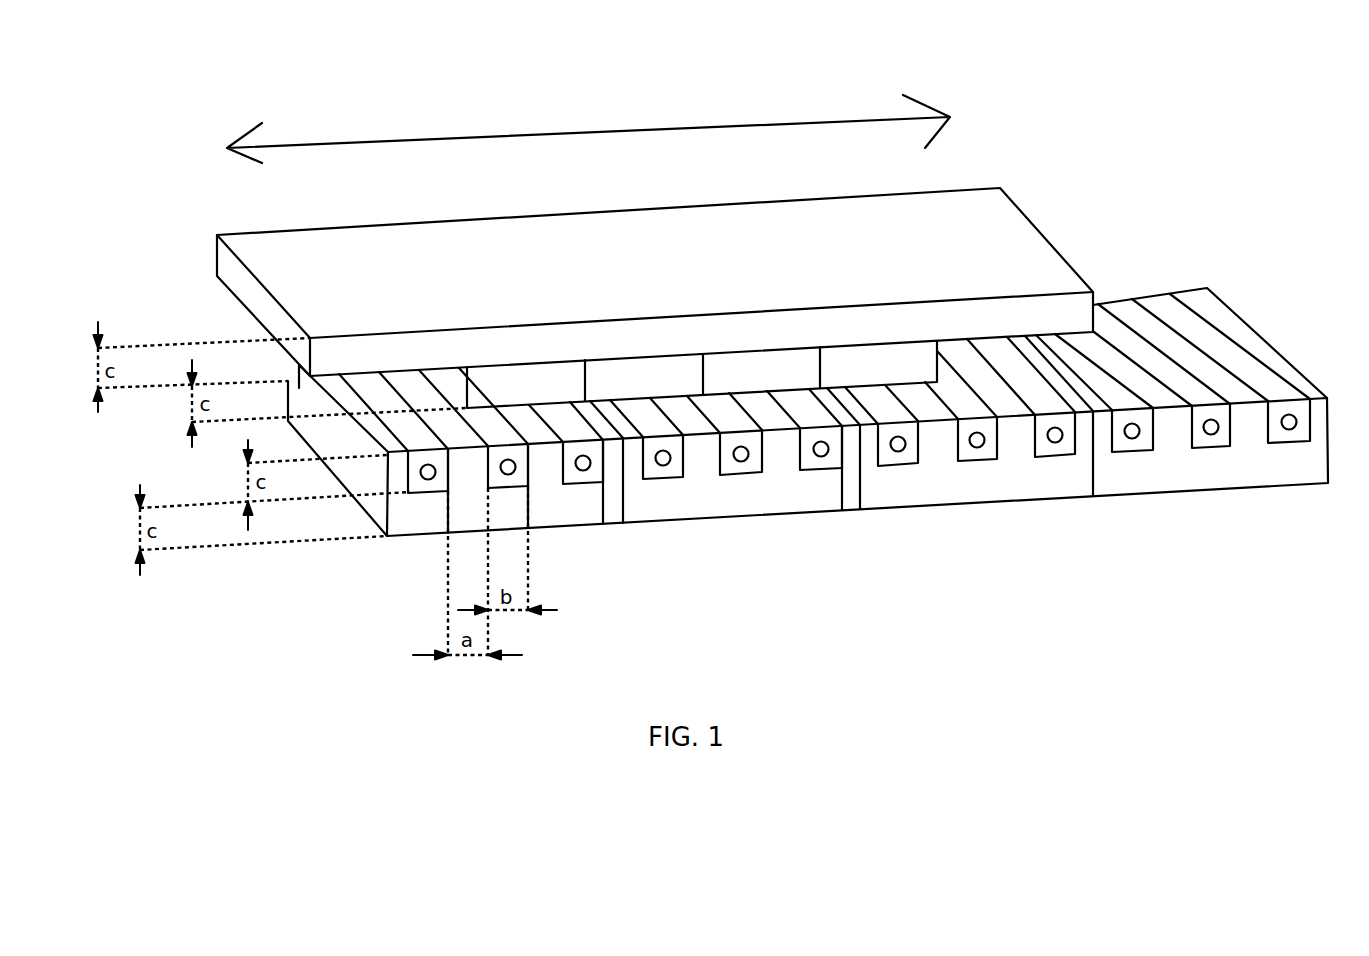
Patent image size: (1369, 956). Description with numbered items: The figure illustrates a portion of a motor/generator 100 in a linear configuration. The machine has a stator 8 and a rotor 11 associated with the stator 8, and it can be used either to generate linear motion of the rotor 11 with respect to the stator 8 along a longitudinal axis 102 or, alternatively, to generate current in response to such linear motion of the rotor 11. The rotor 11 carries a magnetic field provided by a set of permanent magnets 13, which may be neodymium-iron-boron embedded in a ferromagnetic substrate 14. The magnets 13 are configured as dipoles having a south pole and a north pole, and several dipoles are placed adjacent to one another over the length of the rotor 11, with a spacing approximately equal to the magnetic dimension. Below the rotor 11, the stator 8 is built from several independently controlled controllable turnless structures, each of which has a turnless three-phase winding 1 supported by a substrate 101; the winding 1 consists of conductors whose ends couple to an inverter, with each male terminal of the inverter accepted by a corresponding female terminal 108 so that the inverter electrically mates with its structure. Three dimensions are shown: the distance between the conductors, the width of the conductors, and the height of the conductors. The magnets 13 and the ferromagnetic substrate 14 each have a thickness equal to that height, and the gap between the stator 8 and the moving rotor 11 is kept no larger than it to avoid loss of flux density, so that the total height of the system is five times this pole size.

The motor/generator 100 is at (293, 72).
The rotor 11 is at (198, 238).
The ferromagnetic substrate 14 is at (1016, 247).
The permanent magnets 13 is at (563, 378).
The substrate 101 is at (923, 499).
The stator 8 is at (1285, 467).
The turnless three-phase winding 1 is at (1262, 432).
The female terminal 108 is at (584, 471).
The longitudinal axis 102 is at (642, 102).